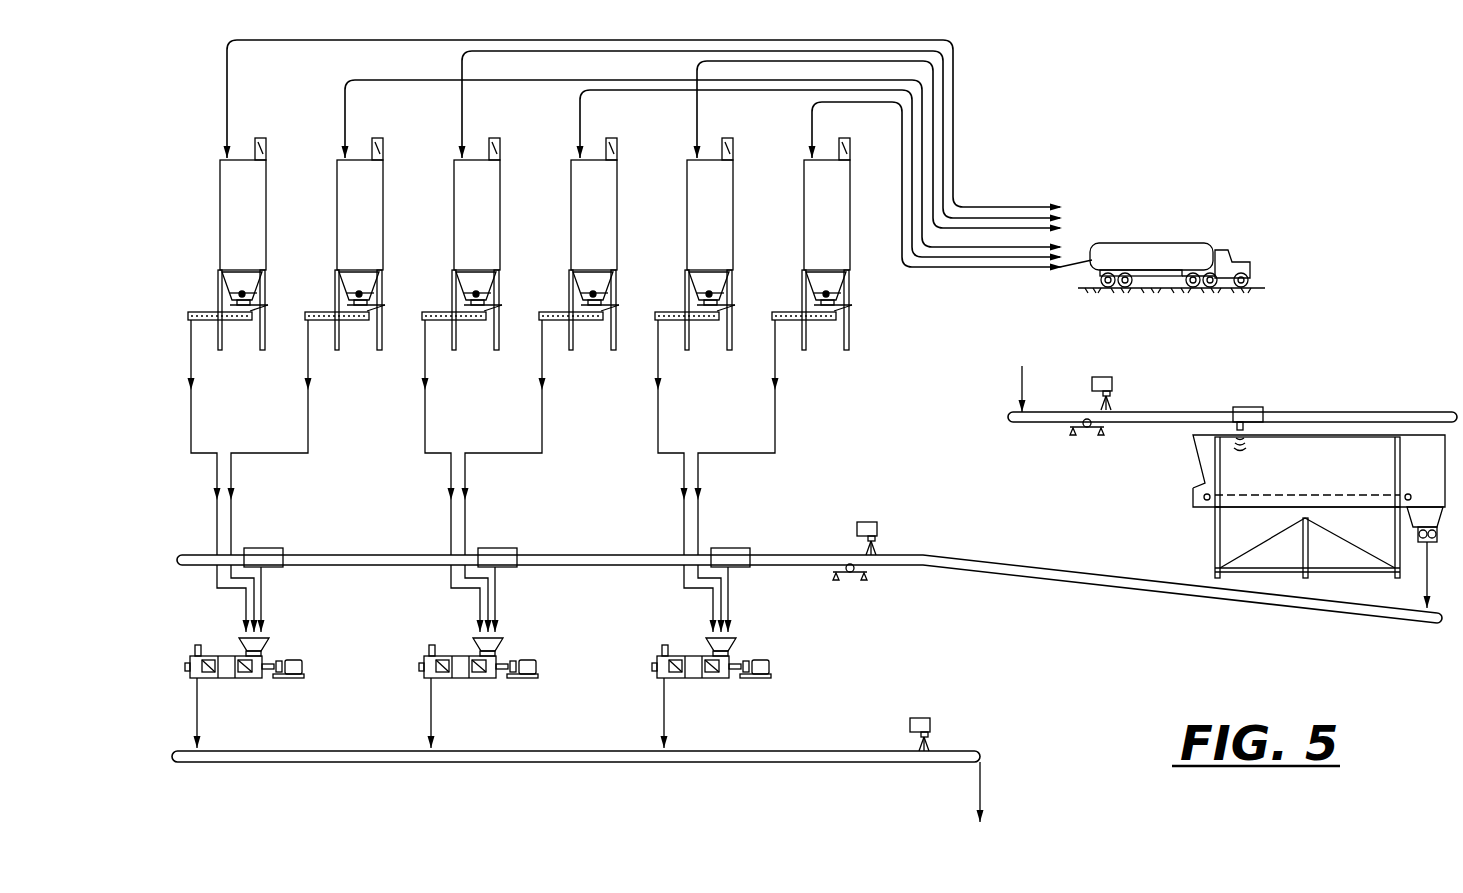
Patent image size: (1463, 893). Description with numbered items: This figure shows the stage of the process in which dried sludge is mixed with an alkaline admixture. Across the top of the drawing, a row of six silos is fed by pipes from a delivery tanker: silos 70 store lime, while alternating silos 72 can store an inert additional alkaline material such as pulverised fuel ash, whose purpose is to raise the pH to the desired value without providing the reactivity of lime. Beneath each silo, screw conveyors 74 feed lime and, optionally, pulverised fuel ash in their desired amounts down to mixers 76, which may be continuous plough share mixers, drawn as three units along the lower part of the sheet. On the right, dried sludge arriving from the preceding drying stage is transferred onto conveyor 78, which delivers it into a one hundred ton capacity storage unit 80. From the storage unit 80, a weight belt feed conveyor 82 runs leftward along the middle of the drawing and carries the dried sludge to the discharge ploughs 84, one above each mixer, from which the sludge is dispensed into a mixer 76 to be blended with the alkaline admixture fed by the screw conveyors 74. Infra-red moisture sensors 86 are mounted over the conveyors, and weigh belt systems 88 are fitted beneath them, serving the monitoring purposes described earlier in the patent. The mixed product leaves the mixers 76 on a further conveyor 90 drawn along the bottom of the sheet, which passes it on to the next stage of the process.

The silo 70 is at (478, 244).
The silo 72 is at (595, 244).
The screw conveyor 74 is at (240, 322).
The mixer 76 is at (210, 655).
The conveyor 78 is at (1195, 412).
The storage unit 80 is at (1343, 457).
The weight belt feed conveyor 82 is at (1035, 568).
The discharge plough 84 is at (275, 548).
The infra-red moisture sensor 86 is at (857, 530).
The weigh belt system 88 is at (852, 576).
The output conveyor 90 is at (747, 762).